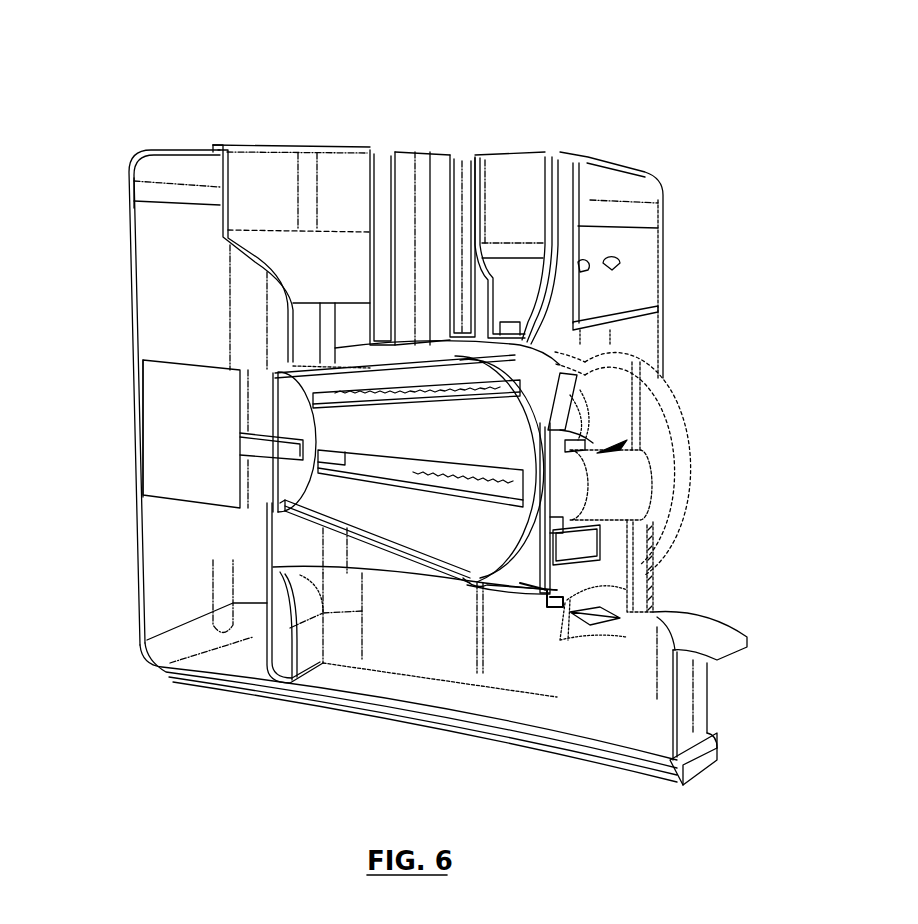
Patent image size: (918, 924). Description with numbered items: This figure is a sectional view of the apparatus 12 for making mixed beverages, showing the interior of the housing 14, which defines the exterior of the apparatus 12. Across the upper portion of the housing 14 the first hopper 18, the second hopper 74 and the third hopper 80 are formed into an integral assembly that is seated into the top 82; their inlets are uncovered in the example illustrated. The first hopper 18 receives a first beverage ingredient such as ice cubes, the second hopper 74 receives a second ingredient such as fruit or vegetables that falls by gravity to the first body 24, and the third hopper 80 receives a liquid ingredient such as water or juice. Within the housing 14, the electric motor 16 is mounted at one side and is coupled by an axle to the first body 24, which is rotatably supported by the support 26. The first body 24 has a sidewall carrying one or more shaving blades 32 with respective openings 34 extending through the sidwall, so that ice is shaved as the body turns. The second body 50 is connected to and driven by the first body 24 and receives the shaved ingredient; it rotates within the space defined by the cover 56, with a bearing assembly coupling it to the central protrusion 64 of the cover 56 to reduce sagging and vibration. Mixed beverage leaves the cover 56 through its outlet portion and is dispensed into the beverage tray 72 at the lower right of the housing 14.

The apparatus 12 is at (171, 78).
The housing 14 is at (130, 295).
The electric motor 16 is at (163, 415).
The first hopper 18 is at (332, 206).
The first body 24 is at (414, 506).
The support 26 is at (293, 550).
The shaving blades 32 is at (384, 470).
The openings 34 is at (462, 467).
The second body 50 is at (531, 556).
The cover 56 is at (665, 458).
The central protrusion 64 is at (628, 497).
The beverage tray 72 is at (615, 728).
The second hopper 74 is at (438, 206).
The third hopper 80 is at (515, 208).
The top 82 is at (152, 167).